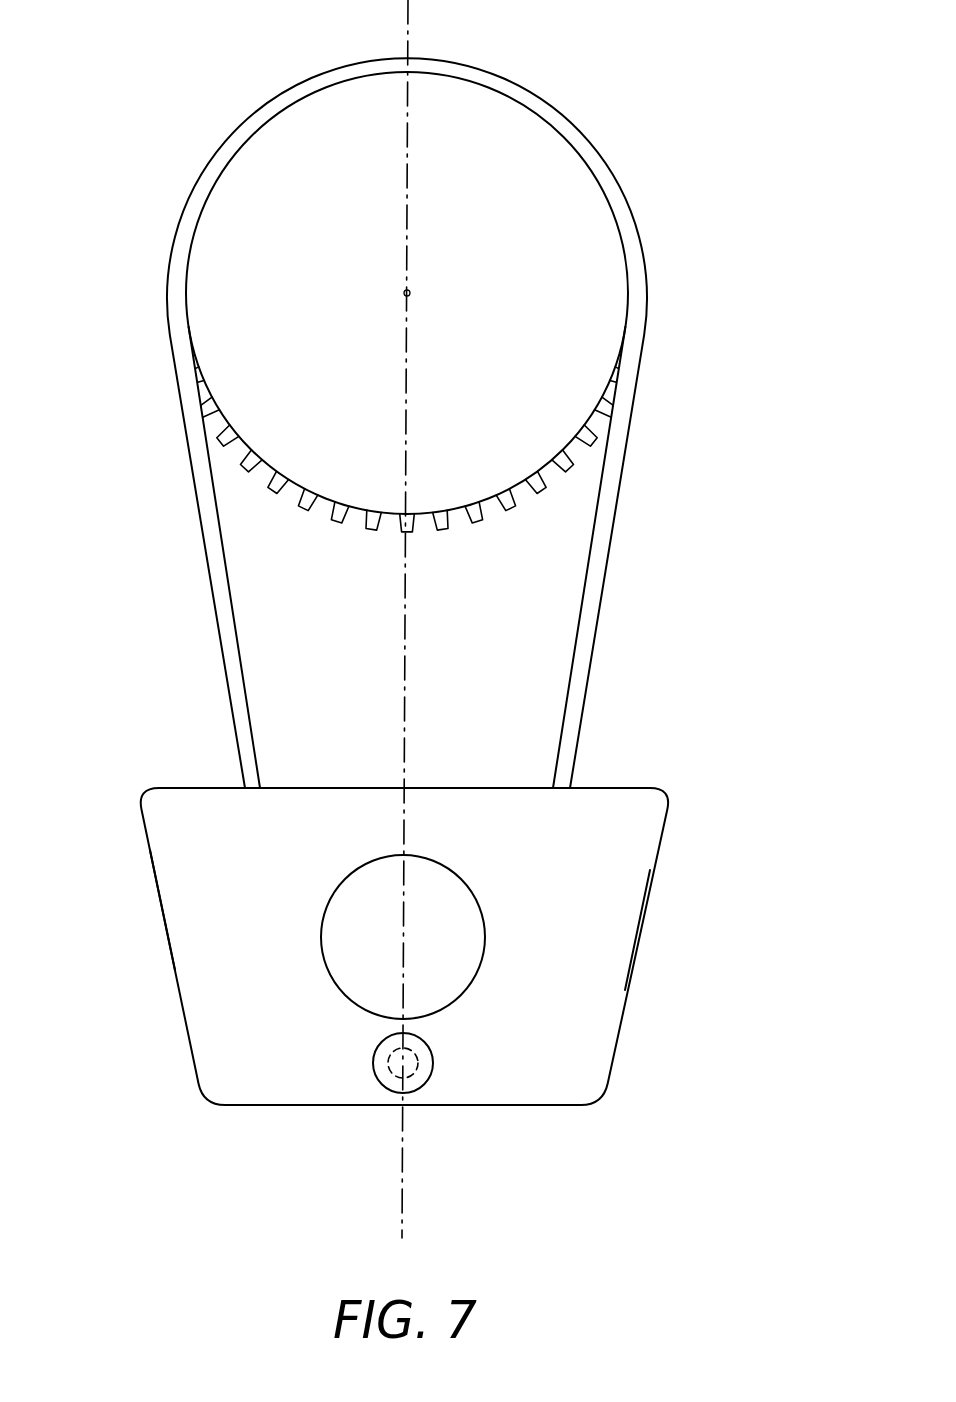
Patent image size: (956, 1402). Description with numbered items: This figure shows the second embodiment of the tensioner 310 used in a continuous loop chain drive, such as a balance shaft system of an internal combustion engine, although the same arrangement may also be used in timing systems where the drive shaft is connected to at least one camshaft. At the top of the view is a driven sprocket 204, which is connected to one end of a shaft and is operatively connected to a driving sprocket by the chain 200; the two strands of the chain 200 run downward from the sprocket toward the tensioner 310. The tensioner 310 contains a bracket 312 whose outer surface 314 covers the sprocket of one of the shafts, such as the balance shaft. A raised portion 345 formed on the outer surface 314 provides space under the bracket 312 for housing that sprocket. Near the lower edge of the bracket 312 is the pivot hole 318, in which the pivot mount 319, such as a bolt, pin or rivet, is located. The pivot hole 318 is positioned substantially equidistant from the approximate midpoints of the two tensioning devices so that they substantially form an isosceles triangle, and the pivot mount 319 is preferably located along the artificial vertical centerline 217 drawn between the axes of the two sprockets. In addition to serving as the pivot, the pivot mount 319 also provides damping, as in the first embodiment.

The chain 200 is at (602, 522).
The driven sprocket 204 is at (567, 308).
The artificial vertical centerline 217 is at (407, 213).
The tensioner 310 is at (690, 877).
The bracket 312 is at (583, 962).
The outer surface 314 is at (193, 943).
The pivot hole 318 is at (372, 1051).
The pivot mount 319 is at (427, 1050).
The raised portion 345 is at (388, 898).